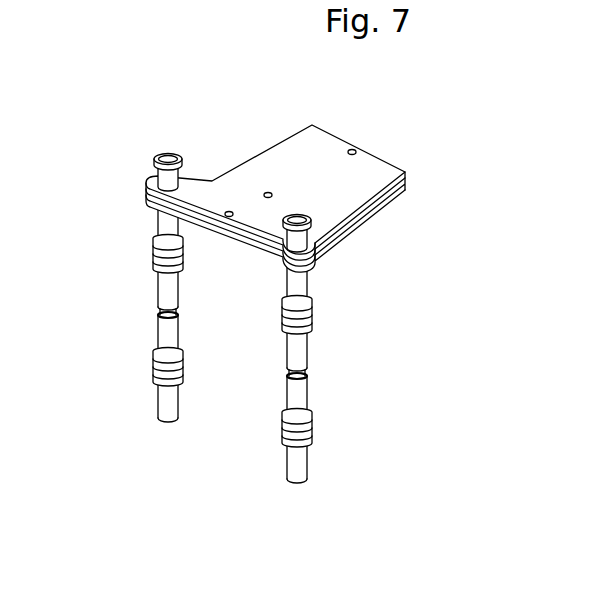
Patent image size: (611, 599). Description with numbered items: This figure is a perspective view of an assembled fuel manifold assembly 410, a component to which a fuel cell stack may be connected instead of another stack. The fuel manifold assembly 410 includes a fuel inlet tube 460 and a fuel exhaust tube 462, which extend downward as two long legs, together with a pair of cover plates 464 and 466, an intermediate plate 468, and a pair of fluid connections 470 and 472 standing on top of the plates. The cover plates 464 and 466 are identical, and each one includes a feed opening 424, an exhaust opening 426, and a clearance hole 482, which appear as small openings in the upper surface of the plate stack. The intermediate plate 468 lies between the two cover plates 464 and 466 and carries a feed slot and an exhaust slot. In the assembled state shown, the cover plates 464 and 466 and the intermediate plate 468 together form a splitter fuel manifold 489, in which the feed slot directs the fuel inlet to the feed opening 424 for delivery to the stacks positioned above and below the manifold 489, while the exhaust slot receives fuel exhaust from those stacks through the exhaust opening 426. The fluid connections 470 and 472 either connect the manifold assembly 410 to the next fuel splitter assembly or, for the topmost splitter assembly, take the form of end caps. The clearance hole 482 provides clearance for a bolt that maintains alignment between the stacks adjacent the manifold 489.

The fuel manifold assembly 410 is at (537, 107).
The splitter fuel manifold 489 is at (472, 115).
The cover plate 466 is at (295, 135).
The intermediate plate 468 is at (406, 178).
The cover plate 464 is at (367, 207).
The feed opening 424 is at (353, 149).
The exhaust opening 426 is at (267, 192).
The clearance hole 482 is at (230, 217).
The fluid connection 470 is at (155, 163).
The fluid connection 472 is at (300, 220).
The fuel inlet tube 460 is at (165, 402).
The fuel exhaust tube 462 is at (293, 465).